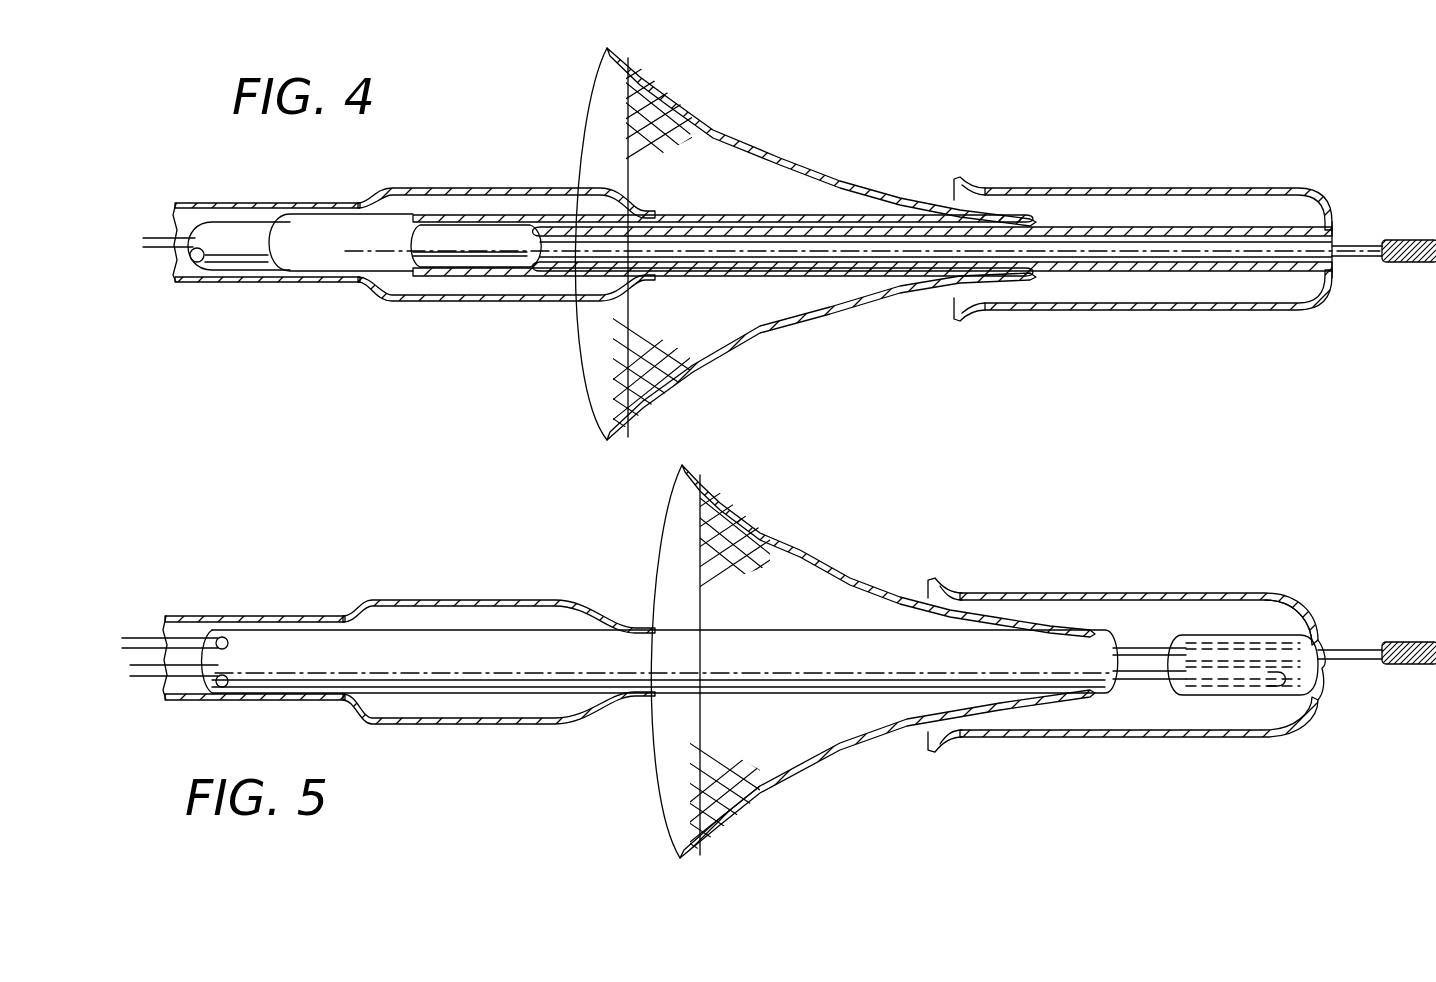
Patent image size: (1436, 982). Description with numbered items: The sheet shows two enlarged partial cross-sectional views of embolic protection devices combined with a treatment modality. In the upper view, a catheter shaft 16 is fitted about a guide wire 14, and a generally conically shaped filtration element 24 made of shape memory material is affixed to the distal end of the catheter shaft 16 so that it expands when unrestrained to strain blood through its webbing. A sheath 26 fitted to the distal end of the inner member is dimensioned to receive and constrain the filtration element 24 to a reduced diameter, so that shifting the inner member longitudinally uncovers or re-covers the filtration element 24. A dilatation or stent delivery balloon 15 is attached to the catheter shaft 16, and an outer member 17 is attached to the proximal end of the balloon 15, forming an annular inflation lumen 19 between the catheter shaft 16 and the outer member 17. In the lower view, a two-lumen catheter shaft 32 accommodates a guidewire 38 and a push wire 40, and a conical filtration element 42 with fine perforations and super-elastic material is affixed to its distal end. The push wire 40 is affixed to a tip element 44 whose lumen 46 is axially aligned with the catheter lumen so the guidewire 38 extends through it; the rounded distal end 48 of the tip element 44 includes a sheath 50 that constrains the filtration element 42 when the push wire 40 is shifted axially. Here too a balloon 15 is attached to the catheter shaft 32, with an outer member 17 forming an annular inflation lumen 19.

In FIG. 4, the guide wire 14 is at (1362, 258).
In FIG. 4, the dilatation or stent delivery balloon 15 is at (568, 187).
In FIG. 5, the dilatation or stent delivery balloon 15 is at (480, 598).
In FIG. 4, the catheter shaft 16 is at (390, 222).
In FIG. 4, the outer member 17 is at (295, 283).
In FIG. 5, the outer member 17 is at (228, 615).
In FIG. 4, the annular inflation lumen 19 is at (187, 263).
In FIG. 5, the annular inflation lumen 19 is at (178, 627).
In FIG. 4, the filtration element 24 is at (650, 108).
In FIG. 4, the sheath 26 is at (1106, 187).
In FIG. 5, the catheter shaft 32 is at (662, 640).
In FIG. 5, the guidewire 38 is at (128, 638).
In FIG. 5, the push wire 40 is at (145, 675).
In FIG. 5, the conical filtration element 42 is at (707, 520).
In FIG. 5, the tip element 44 is at (1247, 638).
In FIG. 5, the lumen 46 is at (1177, 648).
In FIG. 5, the distal end 48 is at (1282, 632).
In FIG. 5, the sheath 50 is at (1100, 592).